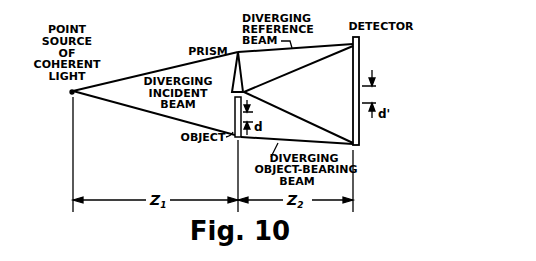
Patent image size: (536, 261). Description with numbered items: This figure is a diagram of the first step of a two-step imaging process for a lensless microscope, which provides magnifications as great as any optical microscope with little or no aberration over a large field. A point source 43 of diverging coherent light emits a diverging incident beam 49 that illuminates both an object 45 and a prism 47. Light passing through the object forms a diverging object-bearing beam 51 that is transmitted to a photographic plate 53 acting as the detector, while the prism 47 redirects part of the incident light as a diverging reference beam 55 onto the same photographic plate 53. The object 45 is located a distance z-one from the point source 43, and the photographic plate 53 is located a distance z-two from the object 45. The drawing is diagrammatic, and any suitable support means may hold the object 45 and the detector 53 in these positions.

The point source 43 is at (70, 95).
The object 45 is at (232, 141).
The prism 47 is at (235, 71).
The diverging incident beam 49 is at (137, 72).
The diverging object-bearing beam 51 is at (262, 141).
The photographic plate 53 is at (360, 52).
The diverging reference beam 55 is at (327, 45).